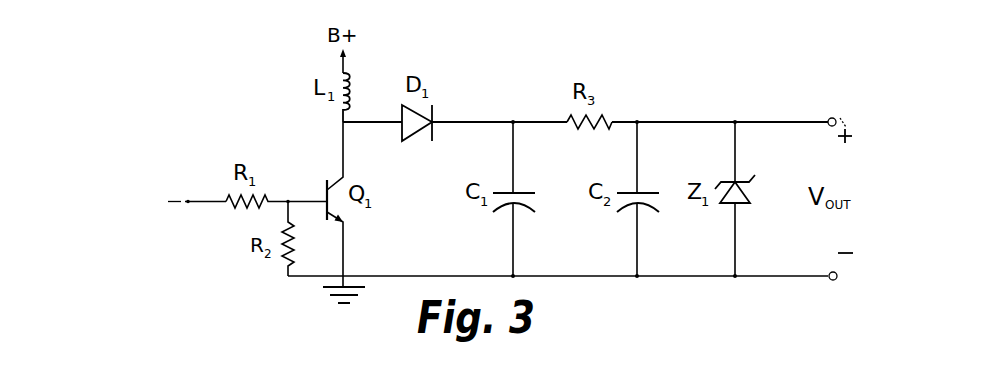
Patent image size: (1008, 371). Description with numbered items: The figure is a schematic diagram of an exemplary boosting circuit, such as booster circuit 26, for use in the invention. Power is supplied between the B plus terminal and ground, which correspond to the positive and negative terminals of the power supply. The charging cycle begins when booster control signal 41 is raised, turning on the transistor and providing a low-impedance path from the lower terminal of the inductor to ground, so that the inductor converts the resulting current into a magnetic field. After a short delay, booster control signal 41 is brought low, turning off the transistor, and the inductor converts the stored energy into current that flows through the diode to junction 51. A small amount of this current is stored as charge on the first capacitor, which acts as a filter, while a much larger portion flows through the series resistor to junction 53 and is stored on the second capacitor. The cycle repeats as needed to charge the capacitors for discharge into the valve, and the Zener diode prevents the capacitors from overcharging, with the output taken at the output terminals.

The booster control signal 41 is at (138, 200).
The junction 51 is at (513, 122).
The junction 53 is at (637, 122).
The booster circuit 26 is at (721, 71).